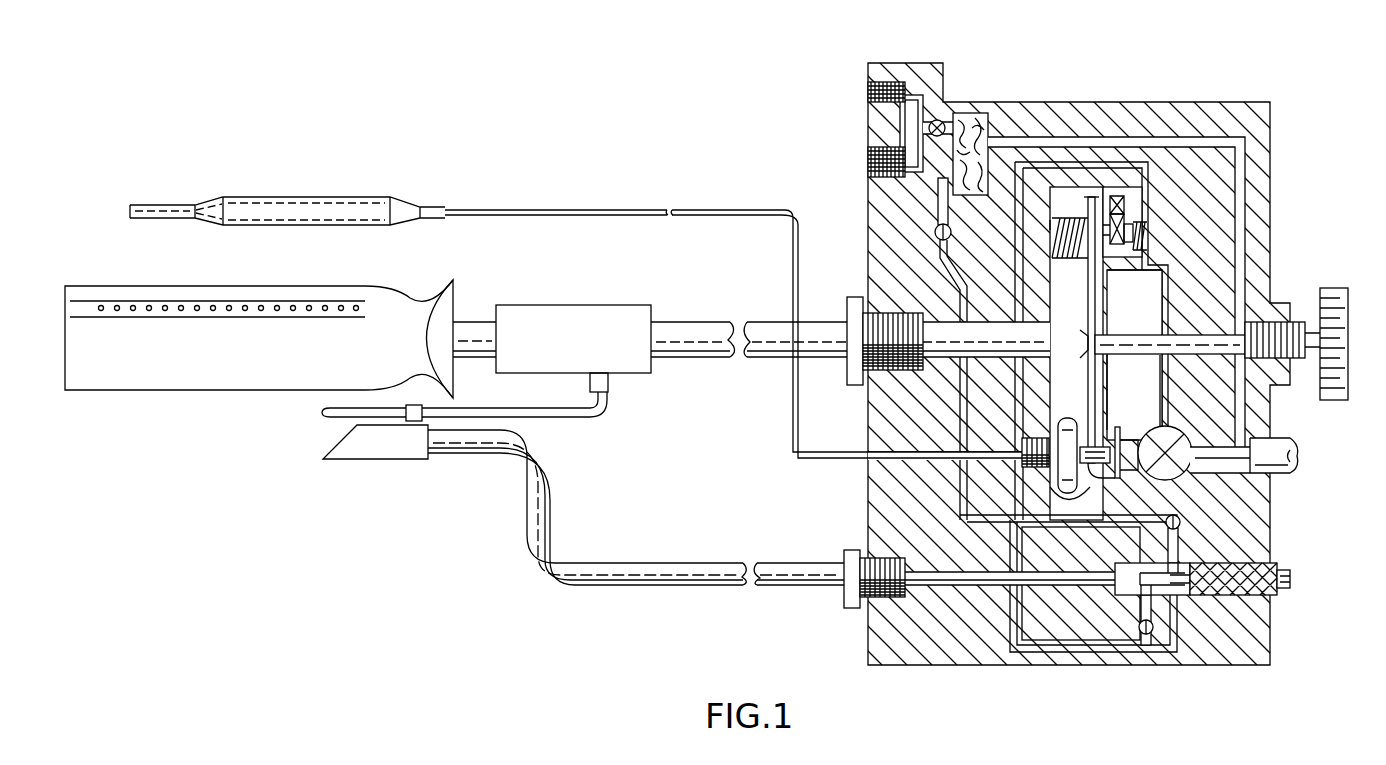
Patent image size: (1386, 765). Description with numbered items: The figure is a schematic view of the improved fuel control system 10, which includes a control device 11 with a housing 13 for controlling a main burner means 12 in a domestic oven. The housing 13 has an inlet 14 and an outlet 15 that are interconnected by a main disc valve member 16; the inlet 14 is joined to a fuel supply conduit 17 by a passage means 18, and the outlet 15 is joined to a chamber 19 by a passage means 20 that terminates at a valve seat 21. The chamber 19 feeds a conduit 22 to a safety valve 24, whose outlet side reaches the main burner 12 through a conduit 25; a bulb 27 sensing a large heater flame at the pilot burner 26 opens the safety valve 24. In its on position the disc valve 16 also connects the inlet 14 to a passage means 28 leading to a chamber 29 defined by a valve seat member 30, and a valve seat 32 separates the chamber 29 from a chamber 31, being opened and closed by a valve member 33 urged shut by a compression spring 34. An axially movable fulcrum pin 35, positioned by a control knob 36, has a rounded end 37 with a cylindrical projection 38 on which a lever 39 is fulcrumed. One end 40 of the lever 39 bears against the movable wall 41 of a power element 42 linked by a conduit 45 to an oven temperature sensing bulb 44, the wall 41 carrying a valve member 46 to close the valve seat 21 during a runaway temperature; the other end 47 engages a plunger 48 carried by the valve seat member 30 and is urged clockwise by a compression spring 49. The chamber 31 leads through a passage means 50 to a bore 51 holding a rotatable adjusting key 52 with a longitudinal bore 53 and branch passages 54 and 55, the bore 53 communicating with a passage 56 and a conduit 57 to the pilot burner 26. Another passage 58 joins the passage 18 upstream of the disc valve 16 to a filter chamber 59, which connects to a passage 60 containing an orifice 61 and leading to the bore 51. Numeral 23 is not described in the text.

The control system 10 is at (708, 56).
The control device 11 is at (1092, 70).
The main burner means 12 is at (283, 290).
The housing 13 is at (1152, 113).
The inlet 14 is at (1192, 440).
The outlet 15 is at (1138, 430).
The main disc valve member 16 is at (1185, 478).
The fuel supply conduit 17 is at (1280, 440).
The passage means 18 is at (1272, 482).
The chamber 19 is at (1066, 383).
The passage means 20 is at (1133, 480).
The valve seat 21 is at (1117, 482).
The conduit 22 is at (700, 320).
The passage 23 is at (993, 318).
The safety valve 24 is at (585, 305).
The conduit 25 is at (476, 320).
The pilot burner 26 is at (383, 460).
The bulb 27 is at (335, 418).
The passage means 28 is at (1172, 298).
The chamber 29 is at (1106, 282).
The valve seat member 30 is at (1108, 255).
The chamber 31 is at (1128, 220).
The valve seat 32 is at (1122, 270).
The valve member 33 is at (1148, 232).
The compression spring 34 is at (1147, 248).
The fulcrum pin 35 is at (1180, 334).
The control knob 36 is at (1332, 290).
The rounded end 37 is at (1102, 338).
The cylindrical projection 38 is at (1090, 342).
The lever 39 is at (1100, 382).
The end of lever 40 is at (1058, 420).
The movable wall 41 is at (1062, 490).
The power element 42 is at (1048, 468).
The oven temperature sensing bulb 44 is at (330, 200).
The conduit 45 is at (555, 210).
The valve member 46 is at (1107, 482).
The end of lever 47 is at (1085, 200).
The plunger 48 is at (1124, 200).
The compression spring 49 is at (1052, 225).
The passage means 50 is at (1014, 244).
The bore 51 is at (1248, 598).
The adjusting key 52 is at (1247, 570).
The longitudinal bore 53 is at (1130, 578).
The branch passage 54 is at (1182, 598).
The branch passage 55 is at (1142, 565).
The passage 56 is at (980, 585).
The conduit 57 is at (665, 588).
The passage 58 is at (1247, 195).
The filter chamber 59 is at (990, 118).
The passage 60 is at (952, 264).
The orifice 61 is at (935, 232).